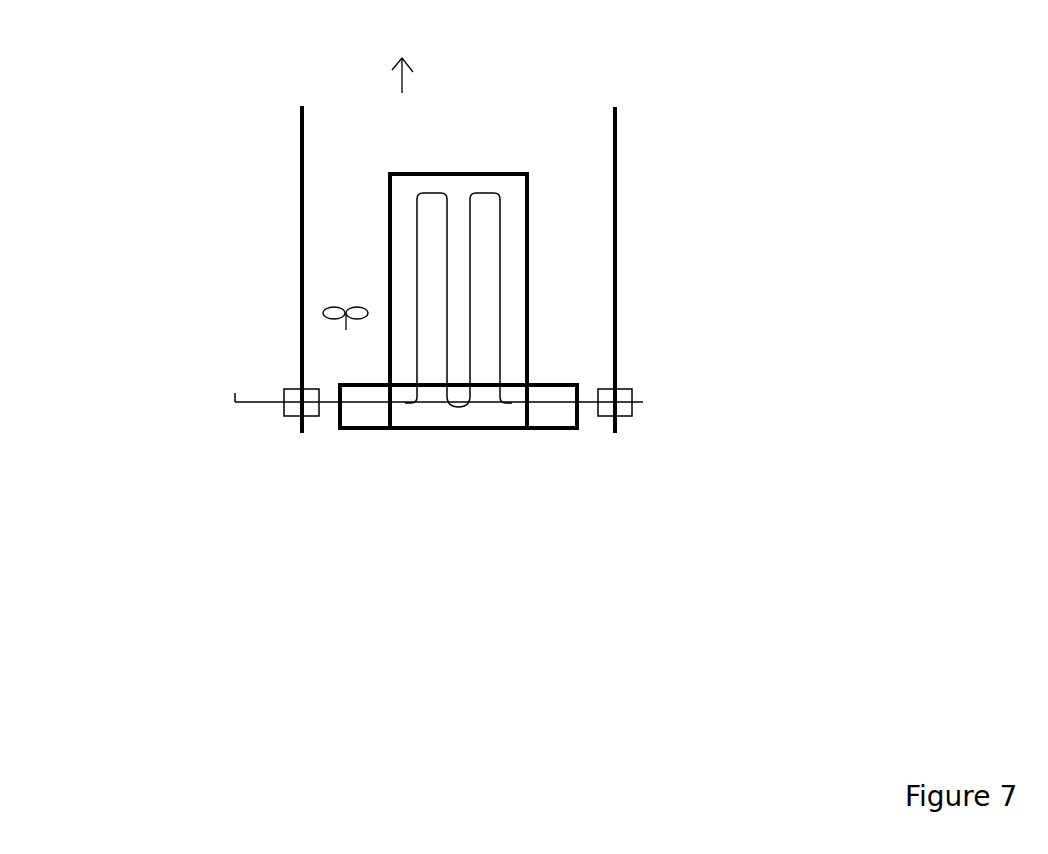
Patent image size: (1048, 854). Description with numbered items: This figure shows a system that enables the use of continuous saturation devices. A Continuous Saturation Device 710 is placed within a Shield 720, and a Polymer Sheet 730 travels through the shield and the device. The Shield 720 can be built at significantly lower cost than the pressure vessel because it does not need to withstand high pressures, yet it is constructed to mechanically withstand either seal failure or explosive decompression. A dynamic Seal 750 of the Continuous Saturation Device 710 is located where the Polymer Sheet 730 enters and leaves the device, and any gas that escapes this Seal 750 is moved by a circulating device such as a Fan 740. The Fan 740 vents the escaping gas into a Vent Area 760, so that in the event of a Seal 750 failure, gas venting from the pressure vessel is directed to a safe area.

The continuous saturation device 710 is at (450, 267).
The shield 720 is at (457, 269).
The polymer sheet 730 is at (252, 397).
The fan 740 is at (345, 320).
The dynamic seal 750 is at (464, 449).
The vent area 760 is at (424, 61).